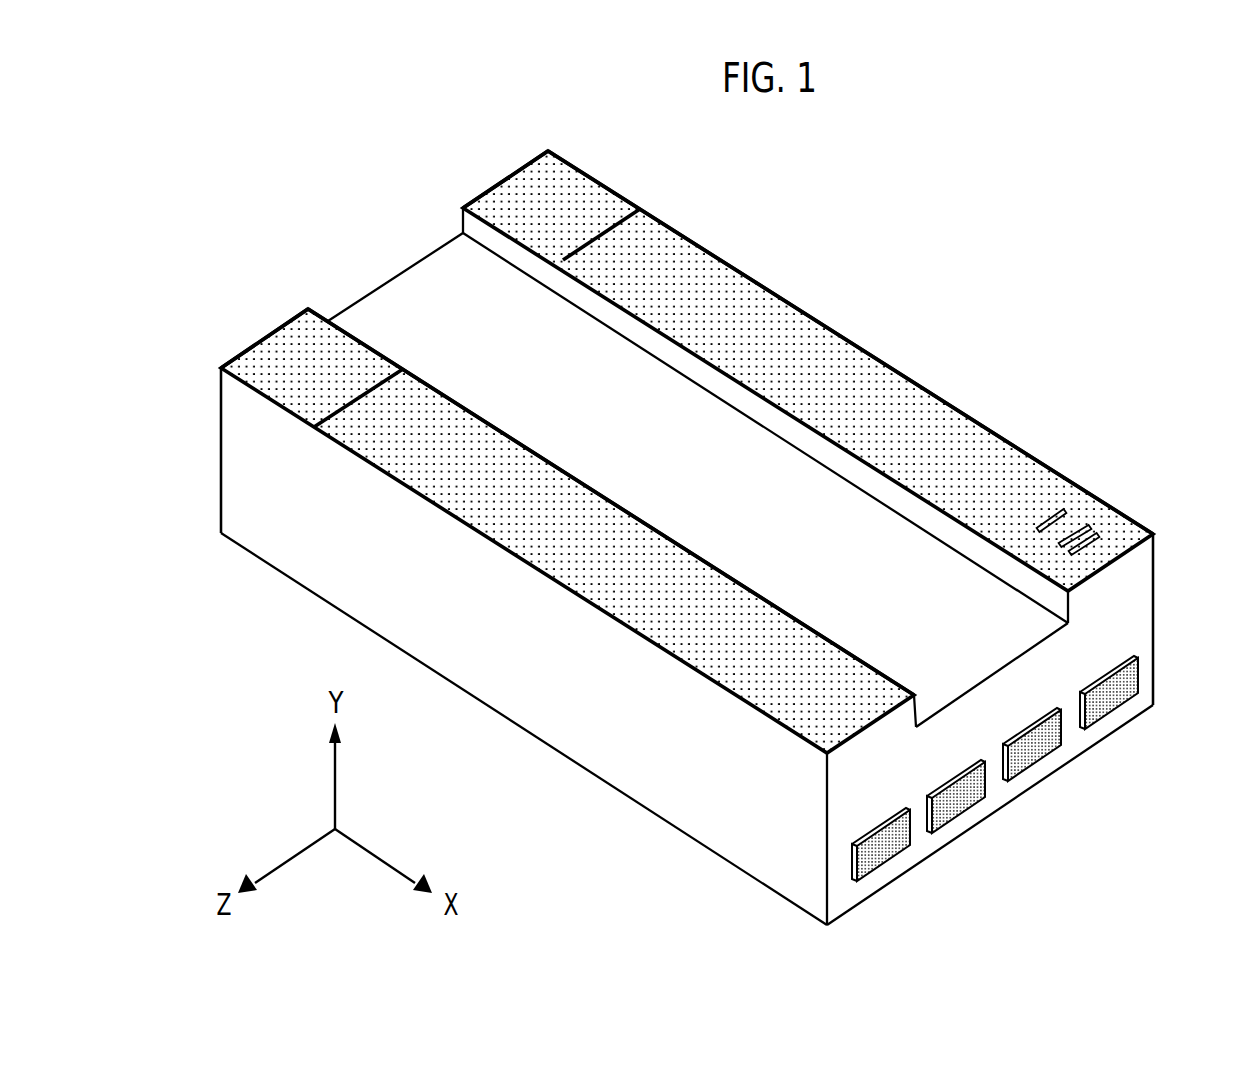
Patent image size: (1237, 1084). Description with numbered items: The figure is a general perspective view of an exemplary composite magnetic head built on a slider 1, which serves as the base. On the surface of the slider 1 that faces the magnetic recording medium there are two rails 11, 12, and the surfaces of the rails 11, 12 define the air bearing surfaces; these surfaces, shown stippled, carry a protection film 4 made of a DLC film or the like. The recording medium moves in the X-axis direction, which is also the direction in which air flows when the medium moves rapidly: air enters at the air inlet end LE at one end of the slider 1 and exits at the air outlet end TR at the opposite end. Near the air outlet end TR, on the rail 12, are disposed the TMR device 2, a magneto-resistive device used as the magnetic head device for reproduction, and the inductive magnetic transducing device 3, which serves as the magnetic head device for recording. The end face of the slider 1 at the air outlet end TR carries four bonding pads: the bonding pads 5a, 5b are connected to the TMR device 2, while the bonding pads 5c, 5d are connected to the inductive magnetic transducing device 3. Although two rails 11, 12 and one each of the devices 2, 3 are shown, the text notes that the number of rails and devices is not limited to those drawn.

The slider 1 is at (344, 587).
The TMR device 2 is at (1046, 503).
The inductive magnetic transducing device 3 is at (1104, 518).
The protection film 4 is at (600, 510).
The bonding pad 5a is at (888, 852).
The bonding pad 5b is at (966, 802).
The bonding pad 5c is at (1040, 746).
The bonding pad 5d is at (1117, 700).
The rail 11 is at (462, 396).
The rail 12 is at (677, 221).
The air inlet end LE is at (263, 307).
The air outlet end TR is at (1097, 575).